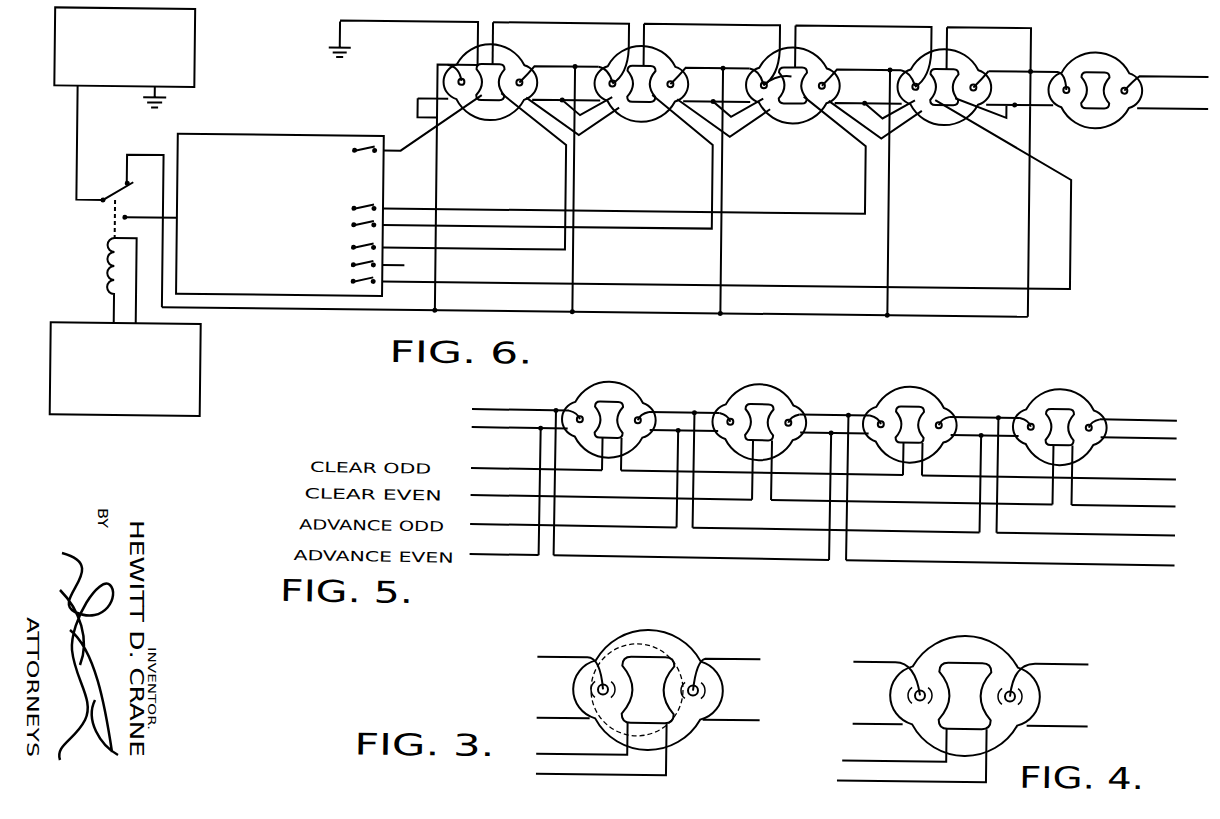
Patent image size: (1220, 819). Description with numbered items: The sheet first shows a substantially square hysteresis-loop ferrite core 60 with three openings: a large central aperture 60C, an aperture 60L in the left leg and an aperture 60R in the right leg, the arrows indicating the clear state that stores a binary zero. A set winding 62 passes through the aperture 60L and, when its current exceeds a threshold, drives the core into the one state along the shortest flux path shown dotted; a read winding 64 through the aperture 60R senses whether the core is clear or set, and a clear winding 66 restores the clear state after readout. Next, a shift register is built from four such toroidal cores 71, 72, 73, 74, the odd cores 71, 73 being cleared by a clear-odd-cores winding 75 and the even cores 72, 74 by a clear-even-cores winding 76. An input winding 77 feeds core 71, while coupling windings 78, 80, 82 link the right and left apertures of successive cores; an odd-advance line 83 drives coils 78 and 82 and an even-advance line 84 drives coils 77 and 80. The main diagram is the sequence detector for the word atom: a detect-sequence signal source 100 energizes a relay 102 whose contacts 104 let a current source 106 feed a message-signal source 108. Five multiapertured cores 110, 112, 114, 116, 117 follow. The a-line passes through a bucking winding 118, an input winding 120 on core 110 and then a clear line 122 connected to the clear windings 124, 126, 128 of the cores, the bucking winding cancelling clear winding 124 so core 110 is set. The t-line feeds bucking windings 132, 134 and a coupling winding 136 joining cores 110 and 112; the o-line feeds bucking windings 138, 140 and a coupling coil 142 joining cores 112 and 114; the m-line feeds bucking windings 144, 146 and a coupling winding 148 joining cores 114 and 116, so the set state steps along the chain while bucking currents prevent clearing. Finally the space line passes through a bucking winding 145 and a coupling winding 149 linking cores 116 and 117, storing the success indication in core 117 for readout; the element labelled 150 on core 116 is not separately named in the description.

In FIG. 3, the ferrite core 60 is at (683, 642).
In FIG. 4, the ferrite core 60 is at (1005, 650).
In FIG. 3, the central aperture 60C is at (640, 667).
In FIG. 3, the left-leg aperture 60L is at (590, 704).
In FIG. 3, the right-leg aperture 60R is at (720, 708).
In FIG. 3, the set winding 62 is at (565, 658).
In FIG. 4, the set winding 62 is at (888, 663).
In FIG. 3, the read winding 64 is at (738, 660).
In FIG. 4, the read winding 64 is at (1075, 663).
In FIG. 3, the clear winding 66 is at (668, 762).
In FIG. 4, the clear winding 66 is at (842, 784).
In FIG. 5, the first toroidal core 71 is at (640, 391).
In FIG. 5, the second toroidal core 72 is at (788, 390).
In FIG. 5, the third toroidal core 73 is at (938, 390).
In FIG. 5, the fourth toroidal core 74 is at (1095, 390).
In FIG. 5, the clear-odd-cores winding 75 is at (521, 468).
In FIG. 5, the clear-even-cores winding 76 is at (526, 495).
In FIG. 5, the input winding 77 is at (521, 408).
In FIG. 5, the coupling winding 78 is at (705, 401).
In FIG. 5, the coupling winding 80 is at (858, 398).
In FIG. 5, the coupling winding 82 is at (1005, 399).
In FIG. 5, the odd-advance line 83 is at (528, 524).
In FIG. 5, the even-advance line 84 is at (521, 554).
In FIG. 6, the detect-sequence signal source 100 is at (202, 365).
In FIG. 6, the relay 102 is at (105, 273).
In FIG. 6, the relay contacts 104 is at (106, 198).
In FIG. 6, the current source 106 is at (193, 50).
In FIG. 6, the message-signal source 108 is at (264, 136).
In FIG. 6, the first magnetic-ferrite core 110 is at (495, 45).
In FIG. 6, the second magnetic-ferrite core 112 is at (650, 52).
In FIG. 6, the third magnetic-ferrite core 114 is at (806, 50).
In FIG. 6, the fourth magnetic-ferrite core 116 is at (955, 44).
In FIG. 6, the storage core 117 is at (1116, 56).
In FIG. 6, the bucking winding 118 is at (476, 105).
In FIG. 6, the input winding 120 is at (446, 64).
In FIG. 6, the clear line 122 is at (1027, 312).
In FIG. 6, the clear winding 124 is at (474, 72).
In FIG. 6, the clear winding 126 is at (625, 50).
In FIG. 6, the clear winding 128 is at (763, 80).
In FIG. 6, the bucking winding 132 is at (503, 105).
In FIG. 6, the bucking winding 134 is at (622, 110).
In FIG. 6, the coupling winding 136 is at (545, 64).
In FIG. 6, the bucking winding 138 is at (657, 108).
In FIG. 6, the bucking winding 140 is at (772, 120).
In FIG. 6, the coupling coil 142 is at (700, 64).
In FIG. 6, the bucking winding 144 is at (817, 108).
In FIG. 6, the bucking winding 145 is at (966, 120).
In FIG. 6, the bucking winding 146 is at (932, 112).
In FIG. 6, the coupling winding 148 is at (862, 64).
In FIG. 6, the coupling winding 149 is at (1031, 64).
In FIG. 6, the output winding 150 is at (962, 70).